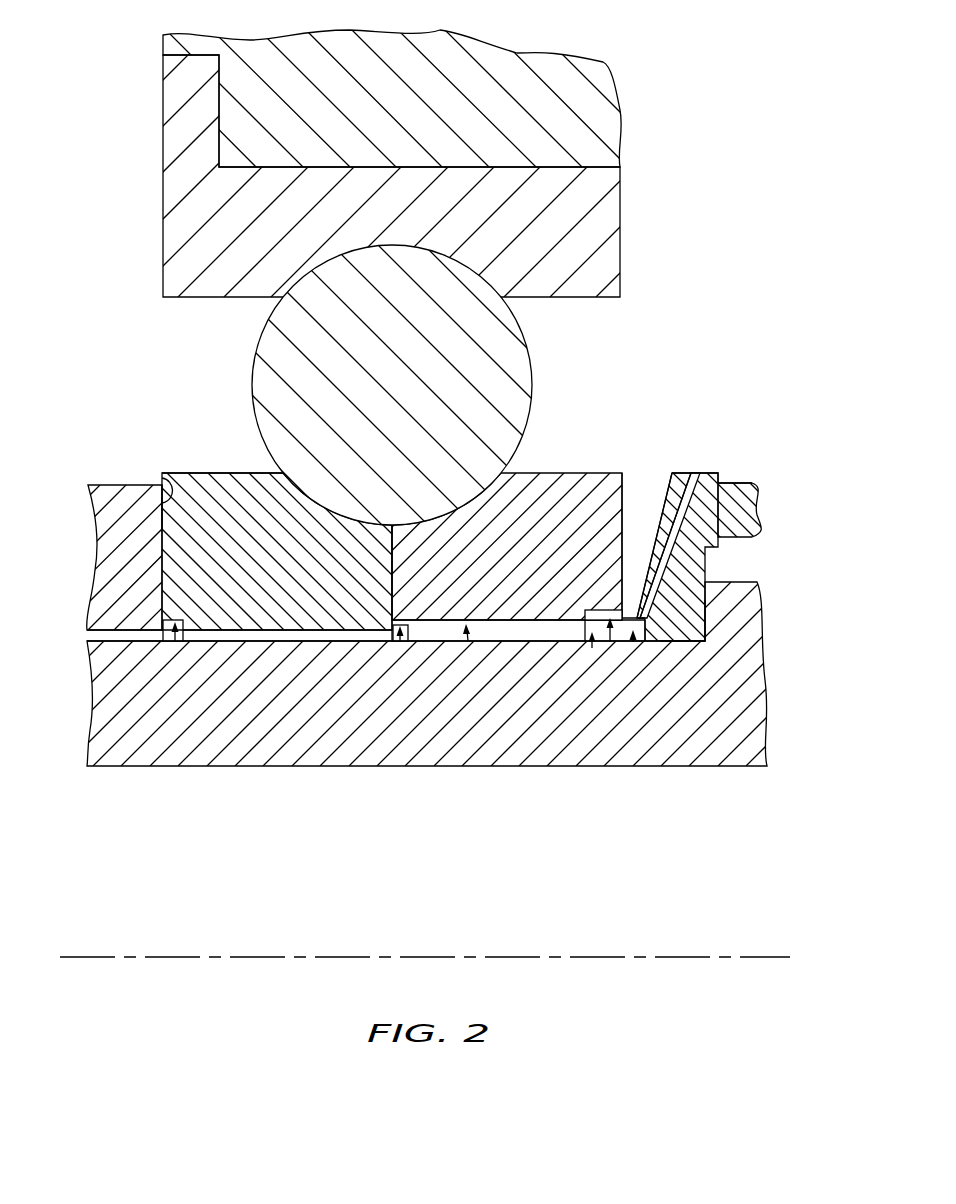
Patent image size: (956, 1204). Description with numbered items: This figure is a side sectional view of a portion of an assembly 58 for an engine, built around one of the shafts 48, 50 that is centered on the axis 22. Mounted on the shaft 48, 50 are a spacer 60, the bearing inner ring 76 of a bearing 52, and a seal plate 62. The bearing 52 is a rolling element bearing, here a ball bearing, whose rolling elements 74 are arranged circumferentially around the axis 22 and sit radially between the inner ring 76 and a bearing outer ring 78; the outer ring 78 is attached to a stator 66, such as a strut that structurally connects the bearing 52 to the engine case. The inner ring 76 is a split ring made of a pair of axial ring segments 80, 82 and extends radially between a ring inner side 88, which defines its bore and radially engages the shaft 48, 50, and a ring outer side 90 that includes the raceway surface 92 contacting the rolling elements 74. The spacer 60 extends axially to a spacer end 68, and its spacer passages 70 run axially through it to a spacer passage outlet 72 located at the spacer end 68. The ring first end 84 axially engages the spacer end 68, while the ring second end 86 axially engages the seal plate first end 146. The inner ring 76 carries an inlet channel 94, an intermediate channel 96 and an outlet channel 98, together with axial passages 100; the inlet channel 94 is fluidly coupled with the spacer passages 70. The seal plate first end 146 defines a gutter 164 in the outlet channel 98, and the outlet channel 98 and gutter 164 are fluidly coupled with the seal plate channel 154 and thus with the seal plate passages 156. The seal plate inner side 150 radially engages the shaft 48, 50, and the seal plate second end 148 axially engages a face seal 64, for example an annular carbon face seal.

The assembly 58 is at (419, 160).
The stator 66 is at (602, 70).
The bearing outer ring 78 is at (620, 237).
The rolling elements 74 is at (270, 338).
The bearing 52 is at (478, 539).
The bearing inner ring 76 is at (378, 494).
The axial ring segment 80 is at (262, 475).
The axial ring segment 82 is at (542, 472).
The ring outer side 90 is at (220, 473).
The raceway surface 92 is at (465, 490).
The spacer end 68 is at (162, 478).
The ring first end 84 is at (160, 527).
The spacer 60 is at (97, 537).
The seal plate 62 is at (699, 533).
The seal plate first end 146 is at (636, 494).
The seal plate passages 156 is at (673, 530).
The face seal 64 is at (755, 497).
The seal plate second end 148 is at (722, 478).
The ring second end 86 is at (618, 550).
The shaft 48 is at (478, 708).
The shaft 50 is at (707, 768).
The spacer passages 70 is at (120, 641).
The spacer passage outlet 72 is at (165, 641).
The inlet channel 94 is at (175, 643).
The ring inner side 88 is at (272, 642).
The intermediate channel 96 is at (400, 643).
The axial passages 100 is at (468, 643).
The outlet channel 98 is at (592, 648).
The gutter 164 is at (610, 643).
The seal plate channel 154 is at (633, 642).
The seal plate inner side 150 is at (705, 641).
The axis 22 is at (682, 957).